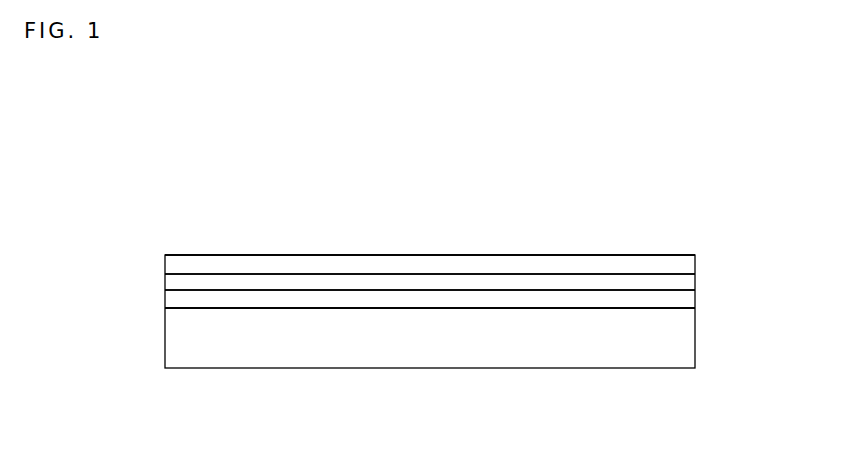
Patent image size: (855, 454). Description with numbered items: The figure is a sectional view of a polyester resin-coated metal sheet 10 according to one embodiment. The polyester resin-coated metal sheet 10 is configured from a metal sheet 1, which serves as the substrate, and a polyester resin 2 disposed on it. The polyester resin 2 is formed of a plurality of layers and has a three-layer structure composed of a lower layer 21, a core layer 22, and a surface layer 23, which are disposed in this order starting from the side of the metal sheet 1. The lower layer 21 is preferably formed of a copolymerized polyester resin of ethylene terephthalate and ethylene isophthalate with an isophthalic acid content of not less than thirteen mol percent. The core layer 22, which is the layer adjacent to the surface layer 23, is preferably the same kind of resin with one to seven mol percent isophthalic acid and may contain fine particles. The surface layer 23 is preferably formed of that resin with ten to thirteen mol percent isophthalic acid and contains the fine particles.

The polyester resin-coated metal sheet 10 is at (670, 180).
The metal sheet 1 is at (480, 342).
The polyester resin 2 is at (714, 256).
The lower layer 21 is at (178, 305).
The core layer 22 is at (180, 285).
The surface layer 23 is at (186, 266).